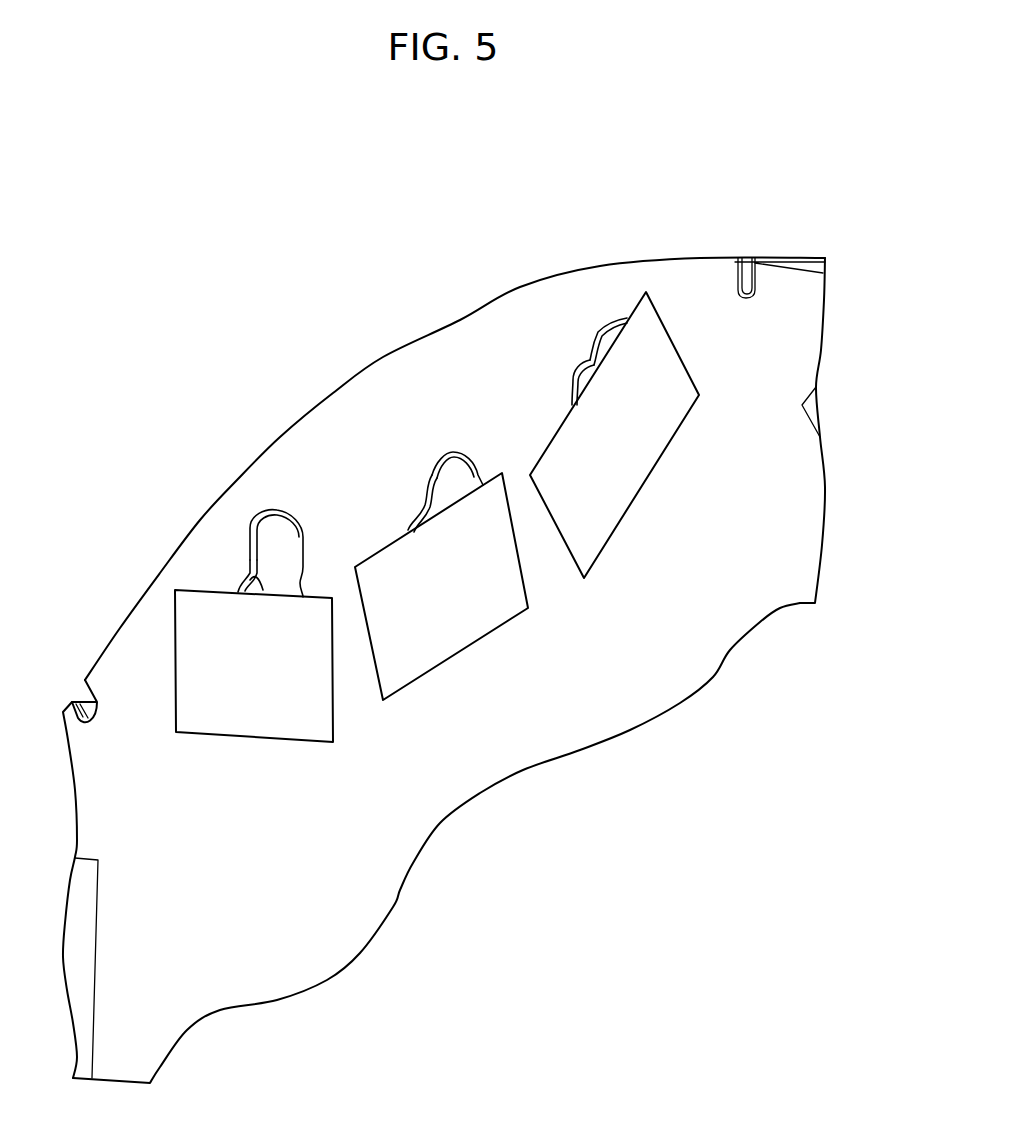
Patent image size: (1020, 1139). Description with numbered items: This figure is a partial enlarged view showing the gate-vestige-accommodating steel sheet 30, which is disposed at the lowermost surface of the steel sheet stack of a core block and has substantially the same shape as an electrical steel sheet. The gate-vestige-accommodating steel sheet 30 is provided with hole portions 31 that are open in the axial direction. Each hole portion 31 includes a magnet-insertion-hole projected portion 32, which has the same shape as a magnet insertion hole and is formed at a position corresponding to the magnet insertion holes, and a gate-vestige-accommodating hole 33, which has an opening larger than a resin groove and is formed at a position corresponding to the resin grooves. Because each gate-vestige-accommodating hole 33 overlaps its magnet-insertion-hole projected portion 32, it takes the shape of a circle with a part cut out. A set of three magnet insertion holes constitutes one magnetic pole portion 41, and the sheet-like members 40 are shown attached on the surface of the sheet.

The gate-vestige-accommodating steel sheet 30 is at (728, 480).
The hole portion 31 is at (96, 405).
The magnet-insertion-hole projected portion 32 is at (242, 733).
The gate-vestige-accommodating hole 33 is at (302, 545).
The attached sheet member 40 is at (193, 628).
The magnetic pole portion 41 is at (465, 355).